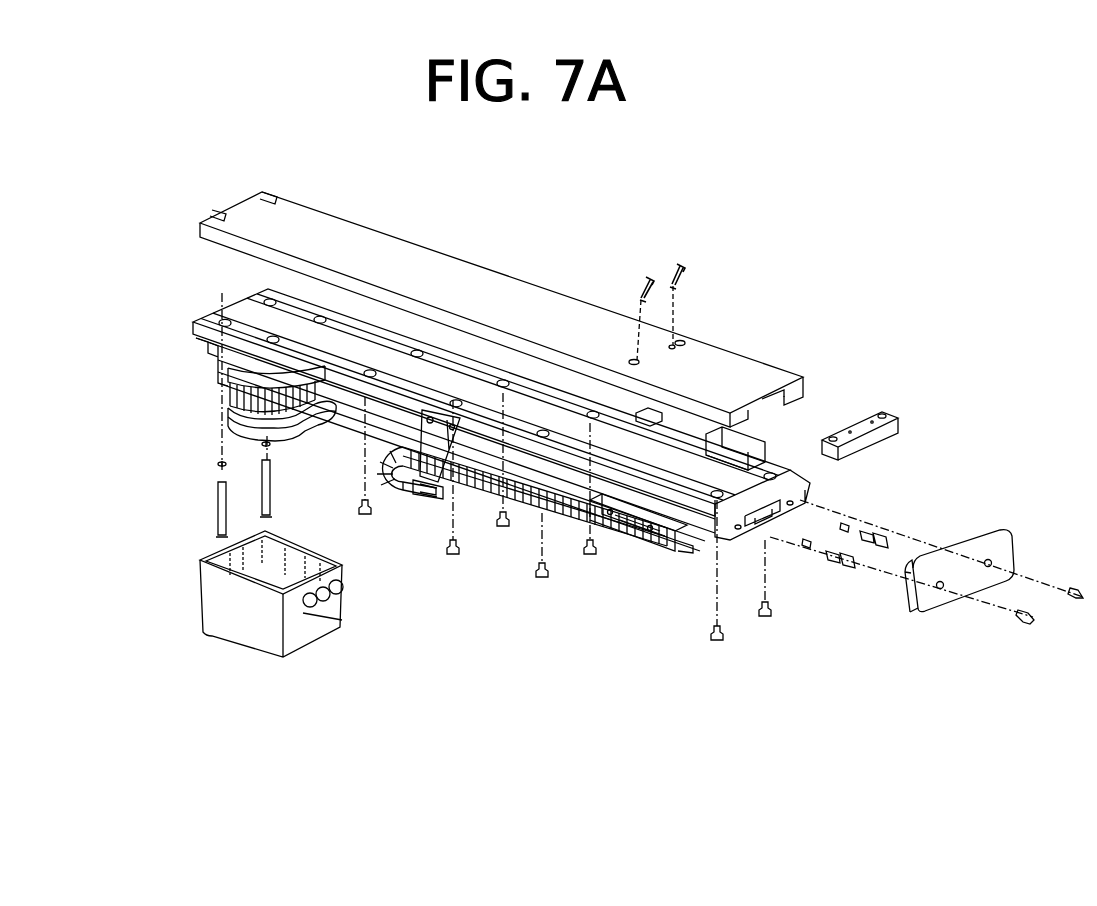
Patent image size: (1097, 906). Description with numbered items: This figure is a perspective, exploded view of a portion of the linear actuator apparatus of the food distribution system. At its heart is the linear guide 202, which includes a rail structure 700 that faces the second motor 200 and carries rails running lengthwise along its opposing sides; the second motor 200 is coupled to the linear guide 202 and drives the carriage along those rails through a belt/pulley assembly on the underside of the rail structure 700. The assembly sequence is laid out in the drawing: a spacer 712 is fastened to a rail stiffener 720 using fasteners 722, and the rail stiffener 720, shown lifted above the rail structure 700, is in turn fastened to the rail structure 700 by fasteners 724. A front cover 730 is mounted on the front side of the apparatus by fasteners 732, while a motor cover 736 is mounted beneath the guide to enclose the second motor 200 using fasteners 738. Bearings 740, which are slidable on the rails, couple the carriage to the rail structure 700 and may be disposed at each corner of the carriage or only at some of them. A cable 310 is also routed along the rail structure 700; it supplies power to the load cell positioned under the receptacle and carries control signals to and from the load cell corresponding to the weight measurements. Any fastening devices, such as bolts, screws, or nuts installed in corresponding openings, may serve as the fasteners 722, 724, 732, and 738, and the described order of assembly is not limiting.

The linear guide 202 is at (148, 197).
The second motor 200 is at (230, 388).
The rail structure 700 is at (363, 388).
The rail stiffener 720 is at (302, 198).
The fasteners 722 is at (684, 264).
The spacer 712 is at (893, 408).
The front cover 730 is at (967, 543).
The fasteners 732 is at (1021, 617).
The fasteners 724 is at (722, 636).
The bearings 740 is at (700, 520).
The cable 310 is at (647, 542).
The motor cover 736 is at (283, 657).
The fasteners 738 is at (217, 535).